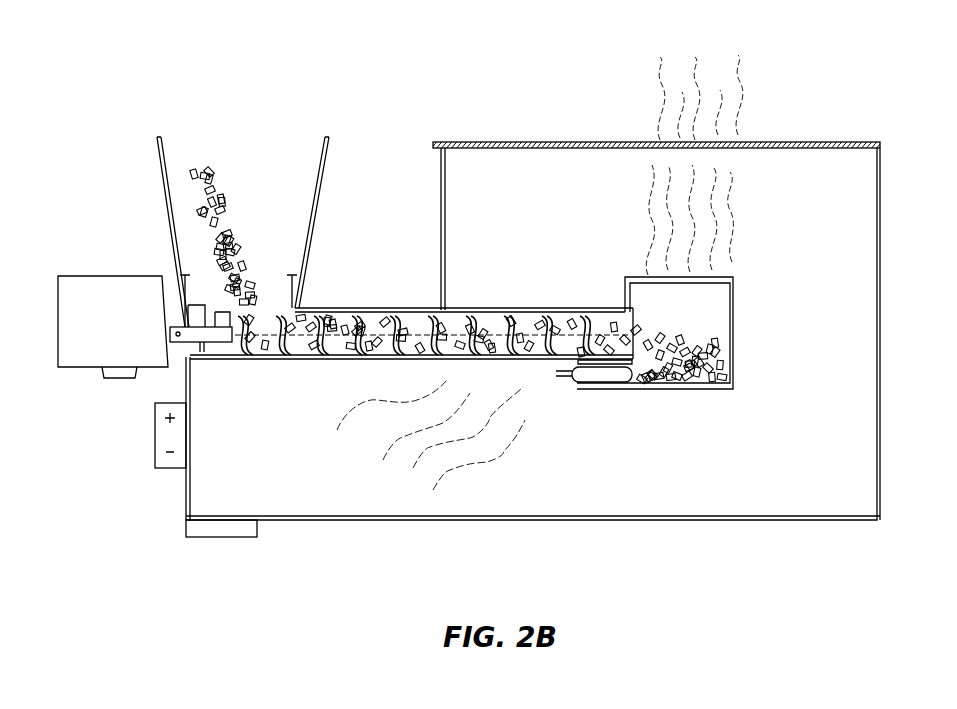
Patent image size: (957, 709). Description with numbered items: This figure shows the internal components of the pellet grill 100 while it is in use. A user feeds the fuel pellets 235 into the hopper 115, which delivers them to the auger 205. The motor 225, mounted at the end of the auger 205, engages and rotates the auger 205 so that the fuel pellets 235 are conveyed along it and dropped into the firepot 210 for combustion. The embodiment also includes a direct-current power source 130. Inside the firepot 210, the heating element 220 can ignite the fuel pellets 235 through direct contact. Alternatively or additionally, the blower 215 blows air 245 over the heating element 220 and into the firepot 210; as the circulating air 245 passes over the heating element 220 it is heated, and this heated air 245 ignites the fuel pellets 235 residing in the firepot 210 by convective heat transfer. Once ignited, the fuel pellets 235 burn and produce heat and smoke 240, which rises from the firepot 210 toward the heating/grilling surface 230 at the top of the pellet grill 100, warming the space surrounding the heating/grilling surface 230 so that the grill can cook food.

The pellet grill 100 is at (845, 98).
The hopper 115 is at (157, 160).
The direct-current power source 130 is at (155, 430).
The auger 205 is at (405, 310).
The firepot 210 is at (735, 318).
The blower 215 is at (208, 537).
The heating element 220 is at (608, 390).
The motor 225 is at (85, 283).
The heating/grilling surface 230 is at (785, 140).
The fuel pellets 235 is at (258, 165).
The heat and smoke 240 is at (745, 202).
The air 245 is at (484, 482).